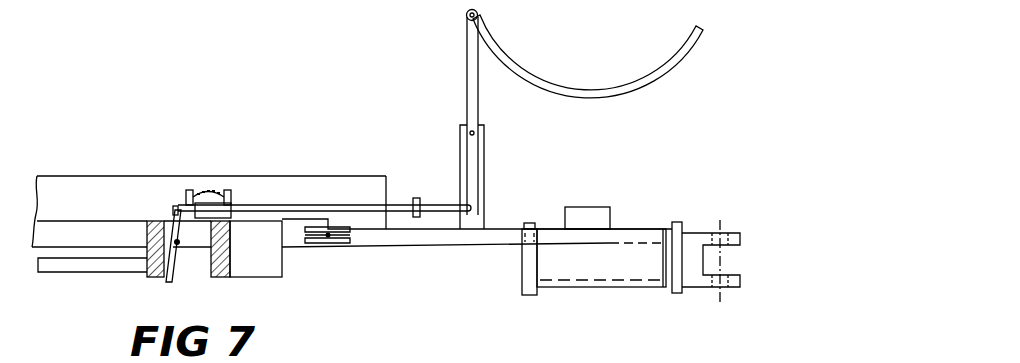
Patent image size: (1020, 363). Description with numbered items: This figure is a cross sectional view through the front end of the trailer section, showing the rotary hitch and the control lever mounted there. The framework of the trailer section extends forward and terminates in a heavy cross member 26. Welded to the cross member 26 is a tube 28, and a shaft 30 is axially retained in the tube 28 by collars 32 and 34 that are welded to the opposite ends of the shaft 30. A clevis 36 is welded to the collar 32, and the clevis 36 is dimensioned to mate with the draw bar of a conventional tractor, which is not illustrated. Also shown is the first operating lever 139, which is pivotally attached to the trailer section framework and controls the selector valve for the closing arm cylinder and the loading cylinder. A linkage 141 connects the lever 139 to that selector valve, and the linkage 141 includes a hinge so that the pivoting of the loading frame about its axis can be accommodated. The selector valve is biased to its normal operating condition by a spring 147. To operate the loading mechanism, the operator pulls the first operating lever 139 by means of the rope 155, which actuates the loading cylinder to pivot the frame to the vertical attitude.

The cross member 26 is at (578, 212).
The tube 28 is at (627, 287).
The shaft 30 is at (567, 282).
The collar 32 is at (678, 226).
The collar 34 is at (532, 288).
The clevis 36 is at (692, 278).
The first operating lever 139 is at (479, 163).
The linkage 141 is at (445, 202).
The spring 147 is at (207, 189).
The rope 155 is at (612, 88).